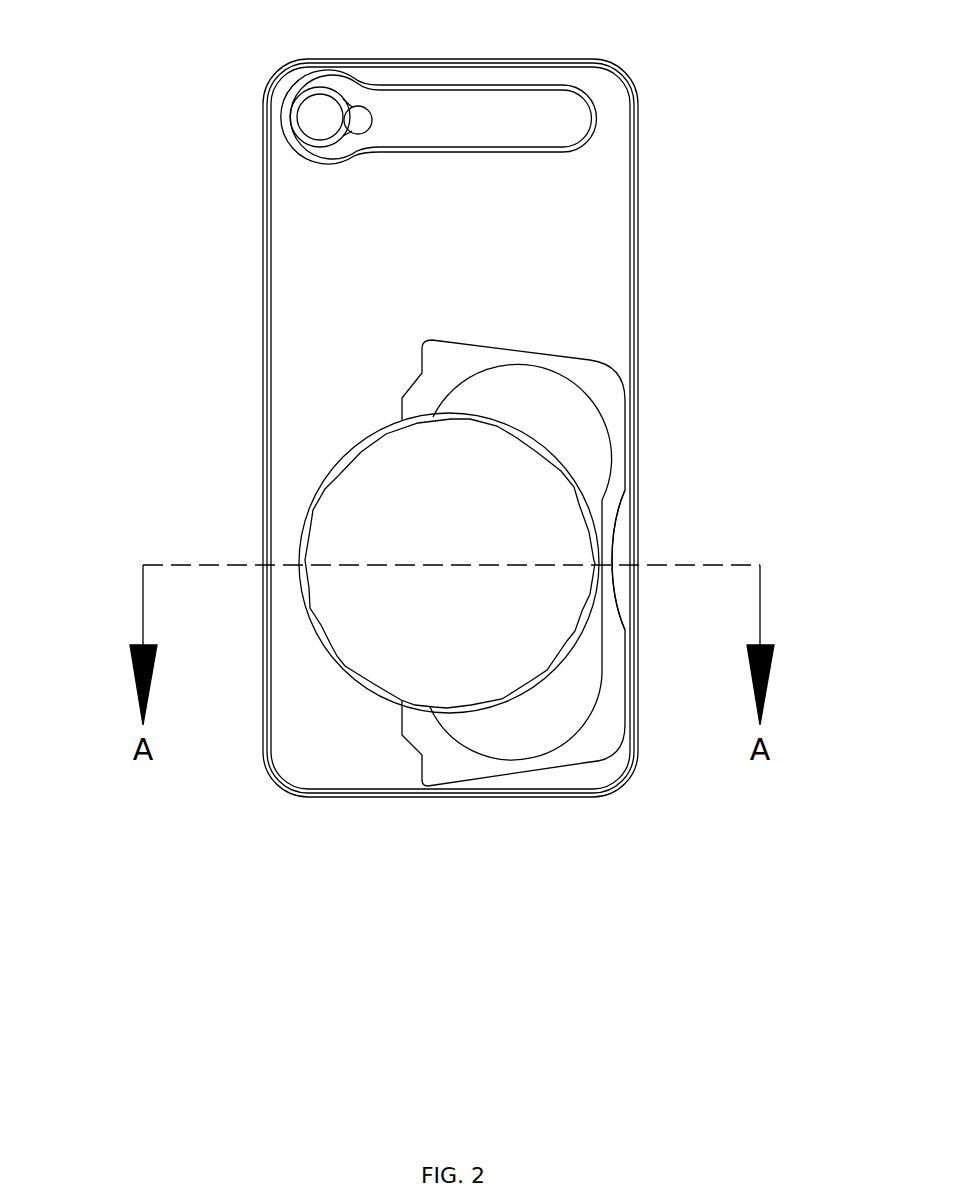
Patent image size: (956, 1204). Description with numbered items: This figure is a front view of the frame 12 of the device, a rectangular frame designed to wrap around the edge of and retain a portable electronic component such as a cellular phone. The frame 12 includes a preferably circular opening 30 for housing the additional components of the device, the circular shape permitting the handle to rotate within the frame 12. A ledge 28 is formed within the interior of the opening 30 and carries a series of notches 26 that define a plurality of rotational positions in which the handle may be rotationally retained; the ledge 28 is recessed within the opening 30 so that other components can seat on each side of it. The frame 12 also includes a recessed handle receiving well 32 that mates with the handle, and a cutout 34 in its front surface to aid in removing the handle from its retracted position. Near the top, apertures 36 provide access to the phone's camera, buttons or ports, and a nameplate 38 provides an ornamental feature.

The frame 12 is at (640, 182).
The notches 26 is at (540, 448).
The ledge 28 is at (367, 687).
The opening 30 is at (328, 605).
The recessed handle receiving well 32 is at (590, 752).
The cutout 34 is at (625, 555).
The apertures 36 is at (318, 113).
The nameplate 38 is at (525, 102).